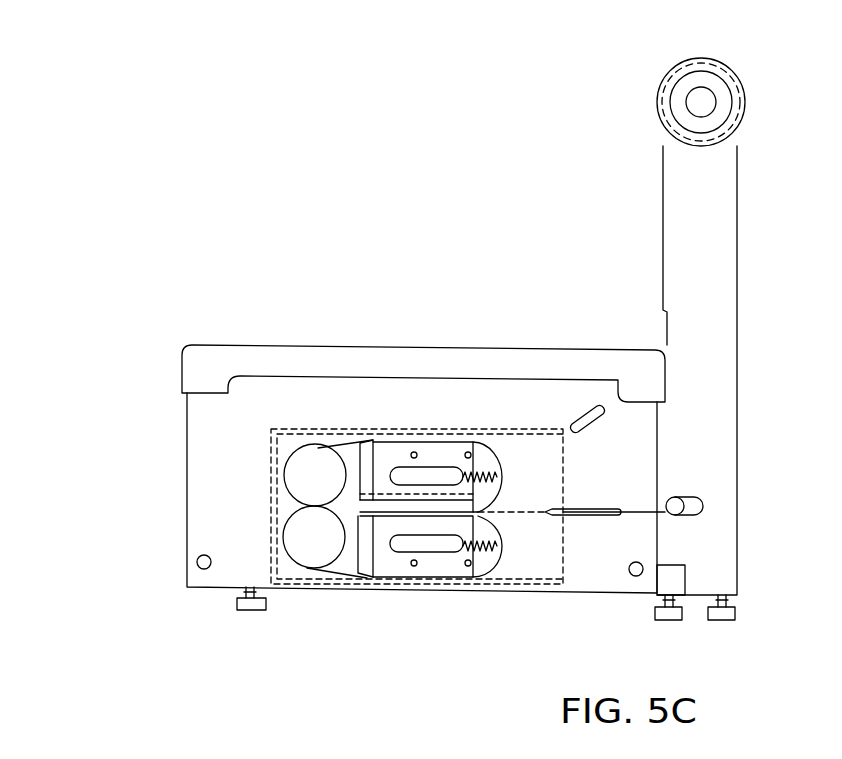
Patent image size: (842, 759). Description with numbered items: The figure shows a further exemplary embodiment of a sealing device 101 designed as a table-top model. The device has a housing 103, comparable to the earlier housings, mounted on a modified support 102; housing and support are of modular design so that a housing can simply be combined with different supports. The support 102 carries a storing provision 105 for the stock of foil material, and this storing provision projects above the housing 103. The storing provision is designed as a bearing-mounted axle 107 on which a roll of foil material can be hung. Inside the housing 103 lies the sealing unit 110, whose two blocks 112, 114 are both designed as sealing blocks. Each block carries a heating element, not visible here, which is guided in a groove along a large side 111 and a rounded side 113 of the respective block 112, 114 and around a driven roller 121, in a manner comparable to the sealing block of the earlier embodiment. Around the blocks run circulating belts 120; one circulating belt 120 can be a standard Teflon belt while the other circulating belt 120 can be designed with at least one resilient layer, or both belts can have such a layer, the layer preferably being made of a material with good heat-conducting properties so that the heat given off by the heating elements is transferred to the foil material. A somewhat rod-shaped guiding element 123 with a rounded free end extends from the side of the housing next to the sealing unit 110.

The sealing device 101 is at (231, 89).
The support 102 is at (675, 248).
The housing 103 is at (212, 426).
The storing provision 105 is at (594, 130).
The bearing-mounted axle 107 is at (695, 101).
The sealing unit 110 is at (403, 388).
The large side 111 is at (386, 503).
The block 112 is at (433, 560).
The rounded side 113 is at (511, 468).
The block 114 is at (427, 455).
The circulating belt 120 is at (333, 445).
The driven roller 121 is at (305, 483).
The guiding element 123 is at (582, 512).